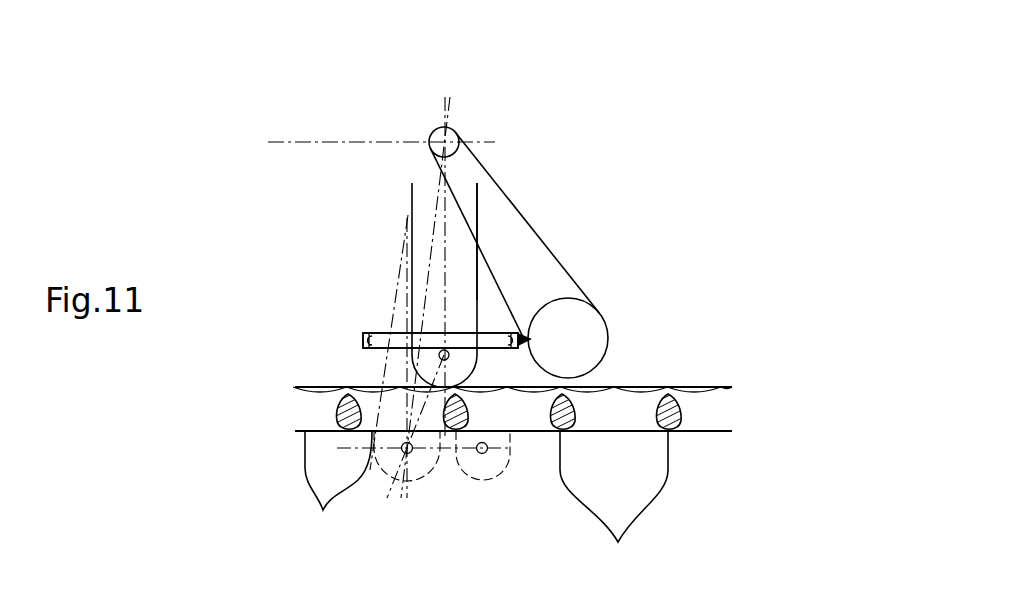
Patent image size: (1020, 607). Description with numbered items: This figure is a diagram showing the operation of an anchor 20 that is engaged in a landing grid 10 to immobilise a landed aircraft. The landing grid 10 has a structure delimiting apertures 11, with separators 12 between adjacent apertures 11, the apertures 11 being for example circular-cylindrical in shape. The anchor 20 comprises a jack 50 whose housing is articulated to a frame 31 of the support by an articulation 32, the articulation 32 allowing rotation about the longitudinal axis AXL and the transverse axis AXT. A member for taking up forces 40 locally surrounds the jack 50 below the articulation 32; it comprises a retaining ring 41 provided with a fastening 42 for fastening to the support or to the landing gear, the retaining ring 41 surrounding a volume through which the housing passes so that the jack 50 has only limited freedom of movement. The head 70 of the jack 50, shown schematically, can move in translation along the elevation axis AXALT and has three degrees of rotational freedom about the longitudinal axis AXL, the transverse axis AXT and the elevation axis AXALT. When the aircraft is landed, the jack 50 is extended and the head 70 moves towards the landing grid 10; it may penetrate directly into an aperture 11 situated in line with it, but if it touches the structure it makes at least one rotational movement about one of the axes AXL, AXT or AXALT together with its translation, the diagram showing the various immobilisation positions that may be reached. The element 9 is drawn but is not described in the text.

The anchor 20 is at (402, 107).
The articulation 32 is at (457, 127).
The frame 31 is at (513, 235).
The head 70 is at (478, 303).
The fastening 42 is at (530, 338).
The drive unit 9 is at (592, 348).
The member for taking up forces 40 is at (364, 340).
The retaining ring 41 is at (440, 340).
The jack 50 is at (412, 207).
The separator 12 is at (337, 411).
The aperture 11 is at (622, 470).
The landing grid 10 is at (700, 431).
The transverse axis AXT is at (312, 142).
The longitudinal axis AXL is at (442, 126).
The elevation axis AXALT is at (446, 218).